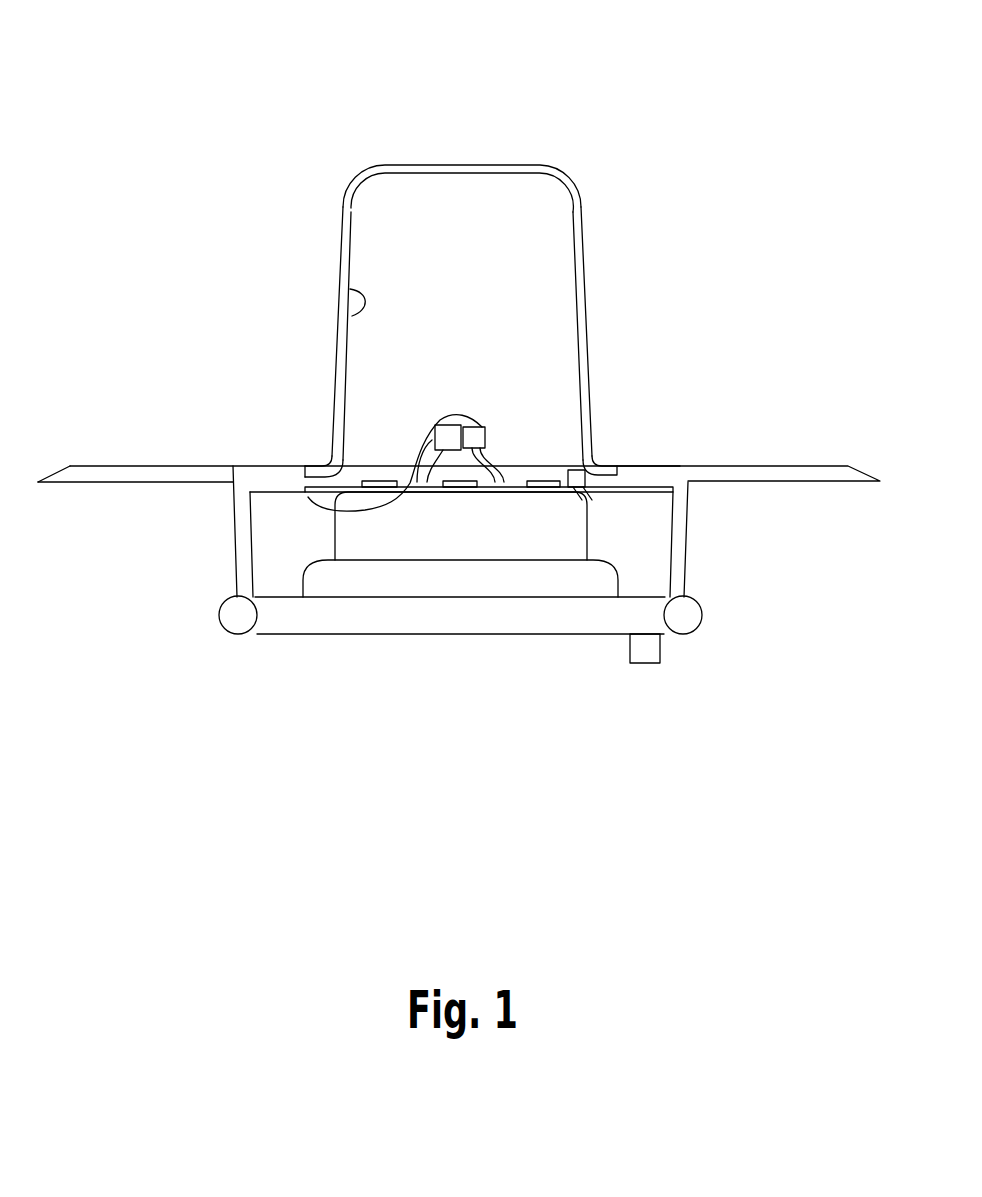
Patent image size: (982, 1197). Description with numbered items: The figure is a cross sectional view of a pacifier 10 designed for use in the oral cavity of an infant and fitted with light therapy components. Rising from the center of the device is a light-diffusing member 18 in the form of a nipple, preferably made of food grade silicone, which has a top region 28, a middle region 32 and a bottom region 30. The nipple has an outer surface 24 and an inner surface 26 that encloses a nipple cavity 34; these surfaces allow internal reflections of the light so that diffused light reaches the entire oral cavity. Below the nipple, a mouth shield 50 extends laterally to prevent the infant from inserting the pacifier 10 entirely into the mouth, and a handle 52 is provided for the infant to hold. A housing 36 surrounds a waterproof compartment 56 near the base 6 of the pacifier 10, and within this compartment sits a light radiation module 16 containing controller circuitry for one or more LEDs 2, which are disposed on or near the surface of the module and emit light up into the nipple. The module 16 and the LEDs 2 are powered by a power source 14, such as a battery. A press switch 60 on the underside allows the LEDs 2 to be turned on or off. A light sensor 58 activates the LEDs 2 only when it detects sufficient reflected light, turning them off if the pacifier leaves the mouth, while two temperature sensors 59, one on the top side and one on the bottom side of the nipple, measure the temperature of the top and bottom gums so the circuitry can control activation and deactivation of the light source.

The pacifier 10 is at (303, 137).
The LED 2 is at (379, 493).
The base 6 is at (216, 615).
The power source 14 is at (302, 577).
The light radiation module 16 is at (335, 537).
The light-diffusing member 18 is at (588, 222).
The outer surface 24 is at (342, 262).
The inner surface 26 is at (352, 316).
The top region 28 is at (395, 165).
The bottom region 30 is at (322, 453).
The middle region 32 is at (588, 308).
The nipple cavity 34 is at (497, 218).
The housing 36 is at (230, 554).
The mouth shield 50 is at (796, 467).
The handle 52 is at (688, 555).
The waterproof compartment 56 is at (633, 538).
The light sensor 58 is at (576, 470).
The temperature sensor 59 is at (308, 497).
The press switch 60 is at (643, 663).